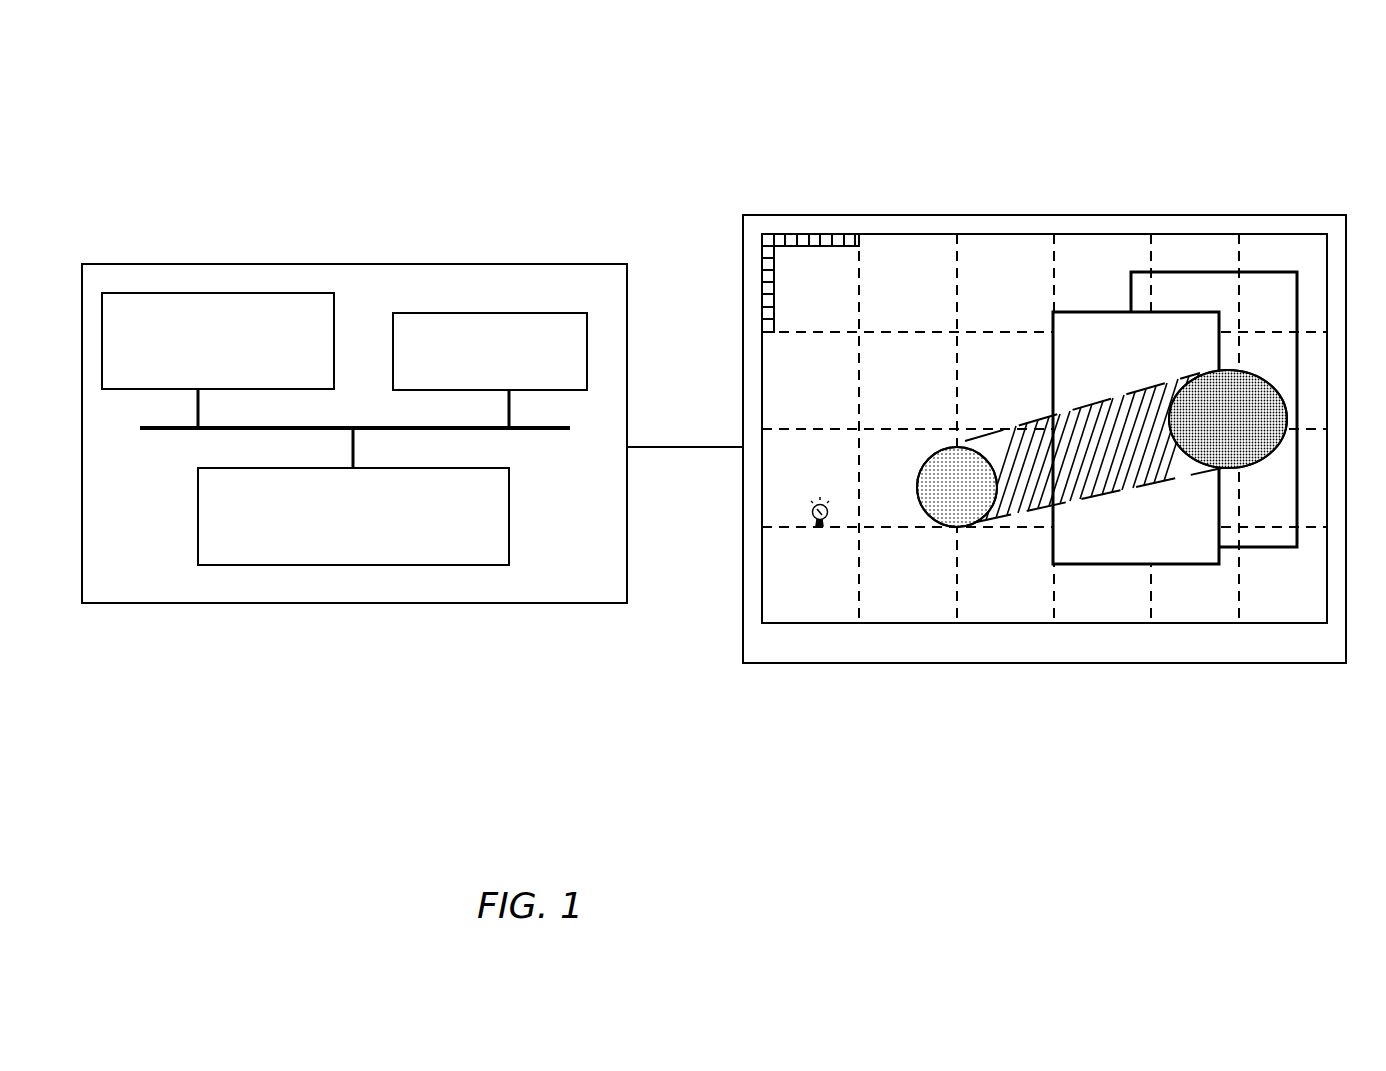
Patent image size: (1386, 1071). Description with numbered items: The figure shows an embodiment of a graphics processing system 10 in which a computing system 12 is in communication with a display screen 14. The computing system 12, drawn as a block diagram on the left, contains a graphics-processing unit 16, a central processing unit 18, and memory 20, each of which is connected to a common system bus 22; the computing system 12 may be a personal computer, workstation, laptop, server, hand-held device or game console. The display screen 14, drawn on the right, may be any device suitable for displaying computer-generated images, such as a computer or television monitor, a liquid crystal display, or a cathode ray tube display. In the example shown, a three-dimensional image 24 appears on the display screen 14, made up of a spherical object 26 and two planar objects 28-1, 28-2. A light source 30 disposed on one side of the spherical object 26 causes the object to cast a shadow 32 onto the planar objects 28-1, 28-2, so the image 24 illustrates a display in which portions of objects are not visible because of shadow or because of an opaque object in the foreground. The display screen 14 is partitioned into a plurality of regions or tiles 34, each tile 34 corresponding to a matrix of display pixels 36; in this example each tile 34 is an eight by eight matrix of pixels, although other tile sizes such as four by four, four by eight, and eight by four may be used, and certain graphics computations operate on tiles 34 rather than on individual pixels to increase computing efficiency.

The graphics processing system 10 is at (190, 88).
The computing system 12 is at (343, 265).
The display screen 14 is at (957, 215).
The graphics-processing unit 16 is at (353, 496).
The central processing unit 18 is at (218, 360).
The memory 20 is at (490, 370).
The system bus 22 is at (160, 430).
The three-dimensional image 24 is at (912, 605).
The spherical object 26 is at (957, 487).
The planar object 28-1 is at (1130, 545).
The planar object 28-2 is at (1267, 293).
The light source 30 is at (812, 513).
The shadow 32 is at (1228, 419).
The tile 34 is at (789, 362).
The display pixels 36 is at (768, 240).